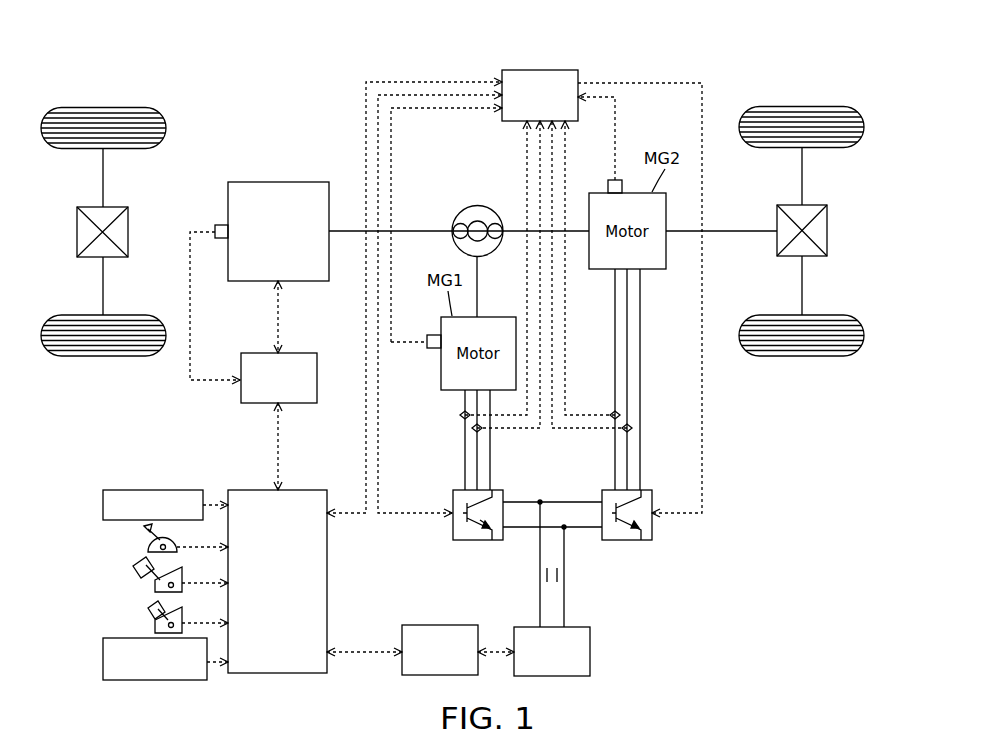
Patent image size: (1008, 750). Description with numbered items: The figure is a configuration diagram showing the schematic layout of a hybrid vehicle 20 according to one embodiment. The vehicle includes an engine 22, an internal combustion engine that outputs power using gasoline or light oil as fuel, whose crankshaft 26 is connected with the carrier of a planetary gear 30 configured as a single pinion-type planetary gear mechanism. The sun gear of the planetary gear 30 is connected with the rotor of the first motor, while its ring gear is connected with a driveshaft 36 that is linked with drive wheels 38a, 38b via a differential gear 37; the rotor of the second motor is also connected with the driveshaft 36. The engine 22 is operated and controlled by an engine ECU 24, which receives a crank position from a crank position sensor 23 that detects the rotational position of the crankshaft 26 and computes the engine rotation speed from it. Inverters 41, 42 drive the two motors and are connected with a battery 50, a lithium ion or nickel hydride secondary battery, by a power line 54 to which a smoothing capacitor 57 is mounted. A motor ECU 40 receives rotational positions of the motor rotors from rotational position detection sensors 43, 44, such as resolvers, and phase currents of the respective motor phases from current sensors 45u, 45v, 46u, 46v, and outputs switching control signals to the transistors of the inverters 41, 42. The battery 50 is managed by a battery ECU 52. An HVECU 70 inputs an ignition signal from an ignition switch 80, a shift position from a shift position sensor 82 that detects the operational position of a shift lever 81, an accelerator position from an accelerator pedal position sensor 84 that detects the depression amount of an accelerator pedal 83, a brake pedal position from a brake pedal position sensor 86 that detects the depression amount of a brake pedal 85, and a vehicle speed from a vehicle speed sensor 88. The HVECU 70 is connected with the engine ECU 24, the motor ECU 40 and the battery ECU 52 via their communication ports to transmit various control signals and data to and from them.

The hybrid vehicle 20 is at (666, 42).
The engine 22 is at (278, 181).
The crank position sensor 23 is at (220, 224).
The engine ECU 24 is at (301, 352).
The crankshaft 26 is at (435, 228).
The planetary gear 30 is at (478, 205).
The driveshaft 36 is at (747, 224).
The differential gear 37 is at (812, 204).
The drive wheel 38a is at (802, 106).
The drive wheel 38b is at (802, 356).
The motor ECU 40 is at (540, 70).
The inverter 41 is at (500, 488).
The inverter 42 is at (649, 488).
The rotational position detection sensor 43 is at (432, 352).
The rotational position detection sensor 44 is at (617, 180).
The current sensor 45u is at (459, 415).
The current sensor 45v is at (471, 428).
The current sensor 46u is at (621, 415).
The current sensor 46v is at (633, 428).
The battery 50 is at (592, 652).
The battery ECU 52 is at (440, 624).
The power line 54 is at (558, 552).
The smoothing capacitor 57 is at (566, 571).
The HVECU 70 is at (303, 488).
The ignition switch 80 is at (102, 505).
The shift lever 81 is at (145, 539).
The shift position sensor 82 is at (150, 546).
The accelerator pedal 83 is at (135, 568).
The accelerator pedal position sensor 84 is at (163, 585).
The brake pedal 85 is at (150, 610).
The brake pedal position sensor 86 is at (163, 625).
The vehicle speed sensor 88 is at (102, 662).